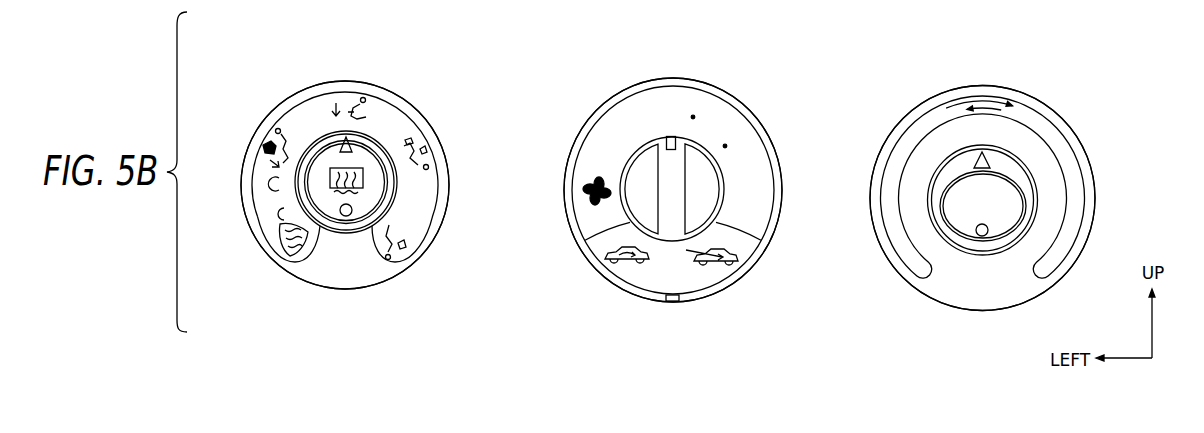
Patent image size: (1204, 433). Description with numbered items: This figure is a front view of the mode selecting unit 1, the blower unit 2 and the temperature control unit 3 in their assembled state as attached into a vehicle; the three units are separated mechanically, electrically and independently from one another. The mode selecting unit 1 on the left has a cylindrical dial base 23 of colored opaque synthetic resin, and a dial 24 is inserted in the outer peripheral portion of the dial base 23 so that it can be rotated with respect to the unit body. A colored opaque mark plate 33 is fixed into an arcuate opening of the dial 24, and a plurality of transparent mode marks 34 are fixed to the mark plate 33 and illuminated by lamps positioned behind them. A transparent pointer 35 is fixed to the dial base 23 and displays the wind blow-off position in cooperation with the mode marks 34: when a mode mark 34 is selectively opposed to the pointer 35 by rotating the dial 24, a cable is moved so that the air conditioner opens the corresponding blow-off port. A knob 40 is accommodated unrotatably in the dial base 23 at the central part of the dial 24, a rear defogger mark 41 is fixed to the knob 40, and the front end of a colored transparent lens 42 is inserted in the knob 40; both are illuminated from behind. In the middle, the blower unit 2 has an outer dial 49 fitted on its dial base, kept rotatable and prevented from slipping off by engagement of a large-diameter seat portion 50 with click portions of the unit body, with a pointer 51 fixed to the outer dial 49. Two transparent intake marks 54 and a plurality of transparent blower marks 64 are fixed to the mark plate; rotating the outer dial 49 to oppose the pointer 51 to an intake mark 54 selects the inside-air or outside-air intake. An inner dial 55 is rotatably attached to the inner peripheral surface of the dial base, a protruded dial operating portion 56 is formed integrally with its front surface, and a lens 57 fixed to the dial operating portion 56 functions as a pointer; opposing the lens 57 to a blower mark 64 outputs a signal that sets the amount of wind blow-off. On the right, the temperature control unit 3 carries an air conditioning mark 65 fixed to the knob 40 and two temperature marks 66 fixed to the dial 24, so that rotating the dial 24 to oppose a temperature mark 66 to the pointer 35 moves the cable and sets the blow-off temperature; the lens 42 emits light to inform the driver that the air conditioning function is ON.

The mode selecting unit 1 is at (413, 95).
The blower unit 2 is at (755, 106).
The temperature control unit 3 is at (1073, 117).
The dial base 23 is at (322, 153).
The dial 24 is at (351, 285).
The mark plate 33 is at (421, 209).
The mode marks 34 is at (353, 100).
The pointer 35 is at (358, 145).
The knob 40 is at (313, 196).
The rear defogger mark 41 is at (366, 175).
The lens 42 is at (346, 216).
The outer dial 49 is at (598, 105).
The seat portion 50 is at (632, 298).
The pointer 51 is at (672, 304).
The intake marks 54 is at (603, 254).
The inner dial 55 is at (700, 212).
The dial operating portion 56 is at (653, 212).
The lens 57 is at (671, 136).
The blower marks 64 is at (640, 100).
The air conditioning mark 65 is at (1008, 200).
The temperature marks 66 is at (905, 138).